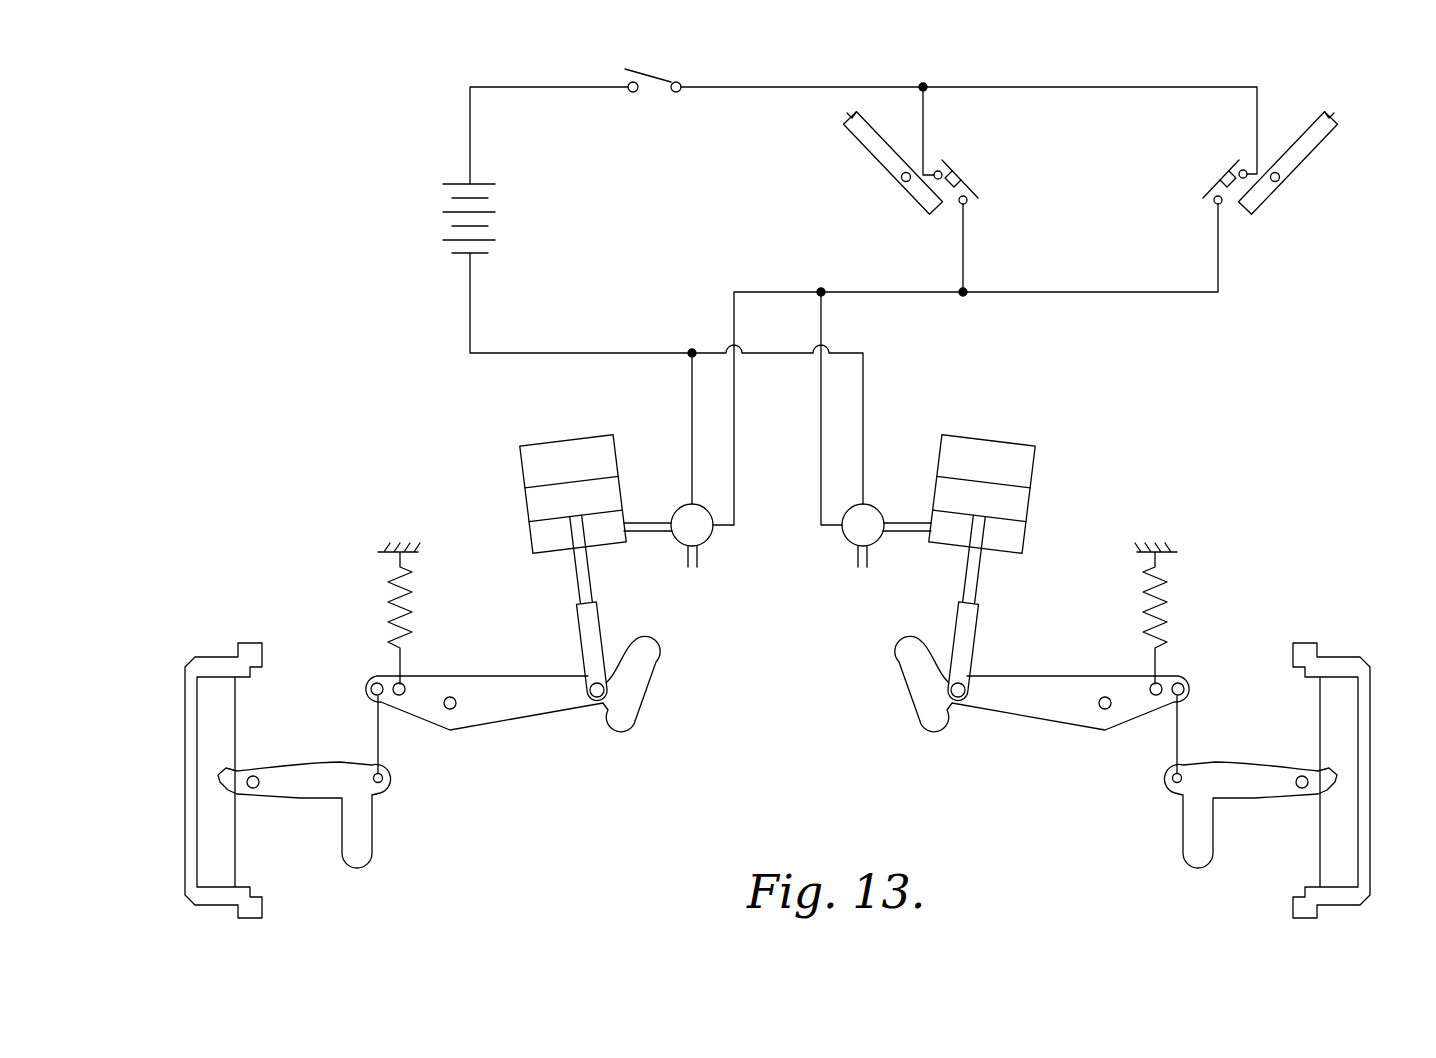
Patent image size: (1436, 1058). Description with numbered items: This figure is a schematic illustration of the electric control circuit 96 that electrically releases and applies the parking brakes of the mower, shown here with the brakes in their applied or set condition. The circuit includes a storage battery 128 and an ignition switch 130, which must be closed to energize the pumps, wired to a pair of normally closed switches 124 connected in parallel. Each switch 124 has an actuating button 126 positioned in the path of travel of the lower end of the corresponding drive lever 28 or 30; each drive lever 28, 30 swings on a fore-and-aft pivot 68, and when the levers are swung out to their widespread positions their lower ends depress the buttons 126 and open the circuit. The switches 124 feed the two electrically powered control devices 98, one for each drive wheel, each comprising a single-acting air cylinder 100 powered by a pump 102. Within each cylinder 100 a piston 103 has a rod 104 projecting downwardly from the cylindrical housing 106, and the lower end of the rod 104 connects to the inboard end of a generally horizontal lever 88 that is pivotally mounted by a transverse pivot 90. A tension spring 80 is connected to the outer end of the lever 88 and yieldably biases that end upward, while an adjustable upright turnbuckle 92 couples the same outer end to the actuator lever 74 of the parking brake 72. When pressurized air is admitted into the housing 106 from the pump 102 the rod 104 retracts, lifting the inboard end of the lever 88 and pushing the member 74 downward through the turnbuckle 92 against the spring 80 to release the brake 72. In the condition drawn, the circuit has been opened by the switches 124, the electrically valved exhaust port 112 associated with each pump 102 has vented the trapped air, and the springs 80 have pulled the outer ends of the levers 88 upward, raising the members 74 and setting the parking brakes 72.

The drive lever 28 is at (860, 130).
The drive lever 30 is at (1322, 143).
The fore-and-aft pivot 68 is at (900, 178).
The parking brake 72 is at (187, 641).
The actuator lever 74 is at (315, 785).
The tension spring 80 is at (395, 600).
The lever 88 is at (545, 705).
The transverse pivot 90 is at (452, 712).
The turnbuckle 92 is at (375, 732).
The electric control circuit 96 is at (947, 78).
The control device 98 is at (781, 527).
The air cylinder 100 is at (782, 453).
The pump 102 is at (712, 537).
The piston 103 is at (538, 508).
The rod 104 is at (585, 581).
The cylindrical housing 106 is at (520, 463).
The exhaust port 112 is at (697, 560).
The switch 124 is at (985, 160).
The actuating button 126 is at (950, 195).
The storage battery 128 is at (443, 212).
The ignition switch 130 is at (660, 82).